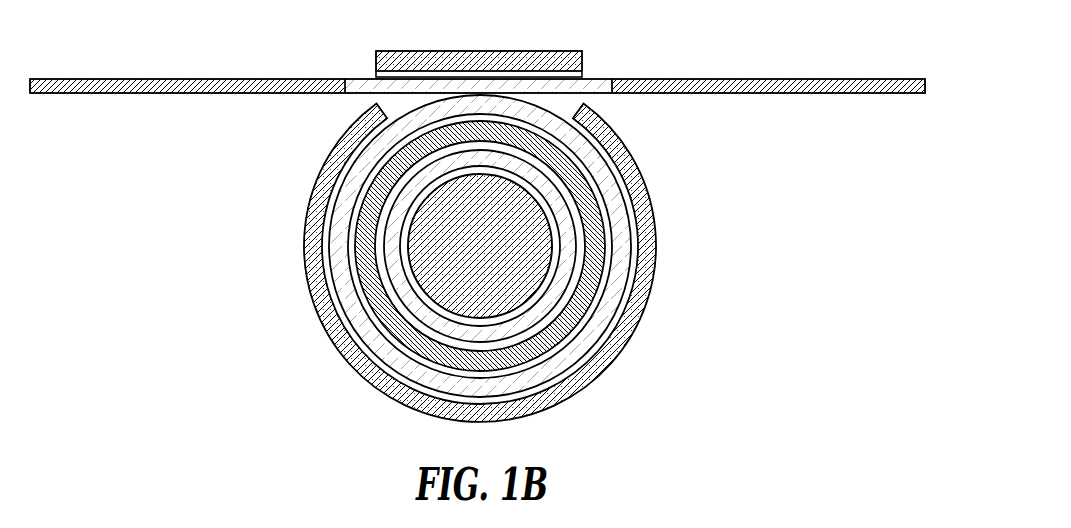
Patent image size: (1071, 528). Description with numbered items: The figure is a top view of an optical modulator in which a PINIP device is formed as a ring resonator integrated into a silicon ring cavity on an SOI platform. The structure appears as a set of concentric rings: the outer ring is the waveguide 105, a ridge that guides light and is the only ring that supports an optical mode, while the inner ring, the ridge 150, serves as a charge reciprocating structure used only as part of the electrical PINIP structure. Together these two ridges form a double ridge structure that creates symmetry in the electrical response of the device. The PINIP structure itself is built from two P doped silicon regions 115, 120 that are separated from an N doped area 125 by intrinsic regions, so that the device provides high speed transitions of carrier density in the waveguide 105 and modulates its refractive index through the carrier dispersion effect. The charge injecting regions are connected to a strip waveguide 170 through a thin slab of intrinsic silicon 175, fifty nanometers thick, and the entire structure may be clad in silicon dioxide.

The waveguide 105 is at (340, 208).
The P doped silicon region 115 is at (331, 158).
The P doped silicon region 120 is at (547, 205).
The N doped area 125 is at (363, 280).
The ridge 150 is at (405, 302).
The strip waveguide 170 is at (482, 51).
The slab of intrinsic silicon 175 is at (765, 78).